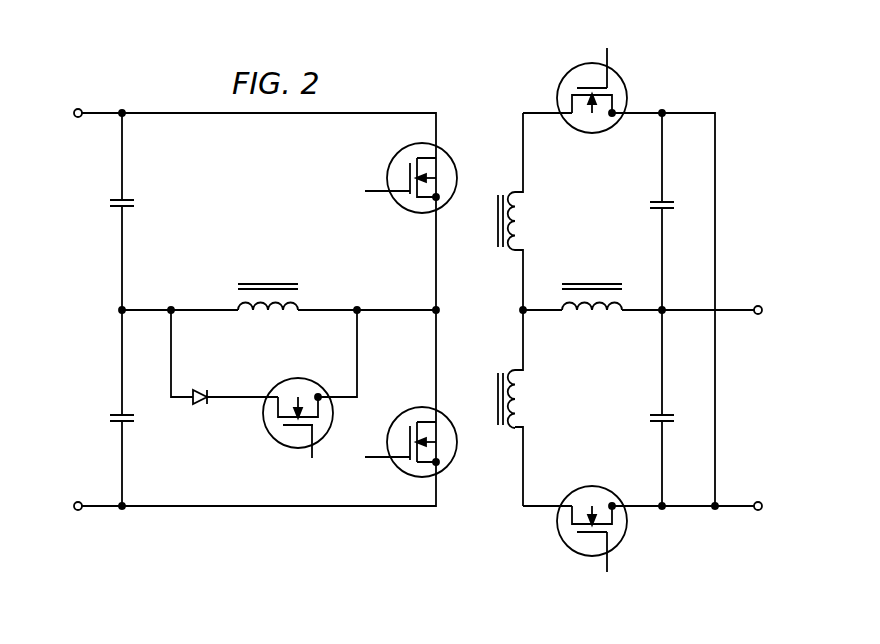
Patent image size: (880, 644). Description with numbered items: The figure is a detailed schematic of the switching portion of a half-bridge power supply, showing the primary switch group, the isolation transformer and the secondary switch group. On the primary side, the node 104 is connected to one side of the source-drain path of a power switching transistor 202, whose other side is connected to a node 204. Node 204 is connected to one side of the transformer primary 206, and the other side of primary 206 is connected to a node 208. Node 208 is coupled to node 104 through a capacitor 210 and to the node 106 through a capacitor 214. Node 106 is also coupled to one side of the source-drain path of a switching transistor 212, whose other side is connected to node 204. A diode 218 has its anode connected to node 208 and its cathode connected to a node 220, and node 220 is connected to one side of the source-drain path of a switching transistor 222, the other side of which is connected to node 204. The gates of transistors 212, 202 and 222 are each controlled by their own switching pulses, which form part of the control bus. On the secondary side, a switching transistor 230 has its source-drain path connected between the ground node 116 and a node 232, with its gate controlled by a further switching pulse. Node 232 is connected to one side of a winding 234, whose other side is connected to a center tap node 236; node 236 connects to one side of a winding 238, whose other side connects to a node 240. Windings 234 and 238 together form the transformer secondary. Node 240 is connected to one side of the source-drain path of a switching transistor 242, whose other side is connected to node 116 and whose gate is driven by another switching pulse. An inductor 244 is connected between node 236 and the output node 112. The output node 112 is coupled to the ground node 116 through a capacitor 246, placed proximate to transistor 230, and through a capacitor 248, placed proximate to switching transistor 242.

The node 104 is at (104, 112).
The node 106 is at (95, 510).
The output node 112 is at (736, 313).
The ground node 116 is at (736, 509).
The power switching transistor 202 is at (390, 168).
The node 204 is at (432, 308).
The primary 206 is at (277, 314).
The node 208 is at (148, 299).
The capacitor 210 is at (106, 204).
The switching transistor 212 is at (412, 408).
The capacitor 214 is at (106, 421).
The diode 218 is at (205, 404).
The node 220 is at (253, 396).
The switching transistor 222 is at (286, 448).
The switching transistor 230 is at (572, 72).
The node 232 is at (520, 110).
The winding 234 is at (520, 222).
The center tap node 236 is at (530, 316).
The winding 238 is at (522, 410).
The node 240 is at (520, 512).
The switching transistor 242 is at (576, 556).
The inductor 244 is at (604, 314).
The capacitor 246 is at (650, 204).
The capacitor 248 is at (650, 421).